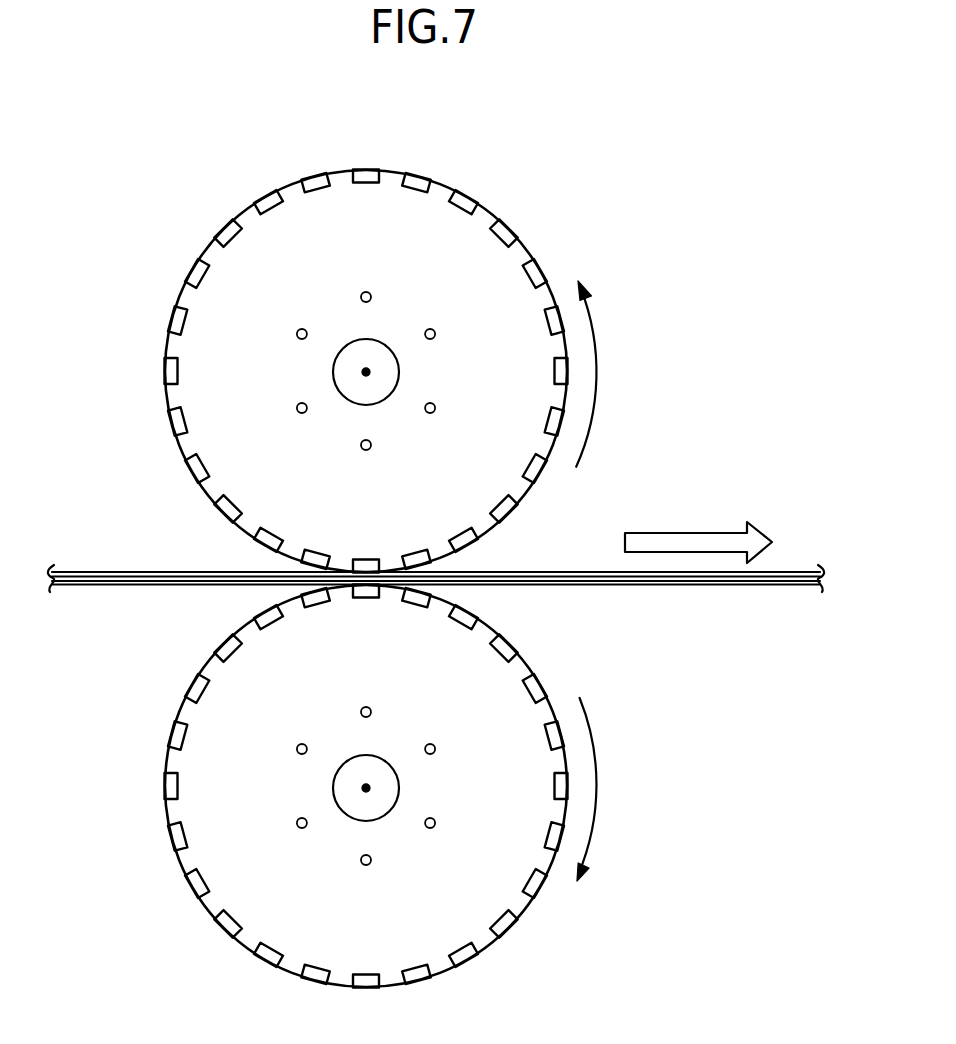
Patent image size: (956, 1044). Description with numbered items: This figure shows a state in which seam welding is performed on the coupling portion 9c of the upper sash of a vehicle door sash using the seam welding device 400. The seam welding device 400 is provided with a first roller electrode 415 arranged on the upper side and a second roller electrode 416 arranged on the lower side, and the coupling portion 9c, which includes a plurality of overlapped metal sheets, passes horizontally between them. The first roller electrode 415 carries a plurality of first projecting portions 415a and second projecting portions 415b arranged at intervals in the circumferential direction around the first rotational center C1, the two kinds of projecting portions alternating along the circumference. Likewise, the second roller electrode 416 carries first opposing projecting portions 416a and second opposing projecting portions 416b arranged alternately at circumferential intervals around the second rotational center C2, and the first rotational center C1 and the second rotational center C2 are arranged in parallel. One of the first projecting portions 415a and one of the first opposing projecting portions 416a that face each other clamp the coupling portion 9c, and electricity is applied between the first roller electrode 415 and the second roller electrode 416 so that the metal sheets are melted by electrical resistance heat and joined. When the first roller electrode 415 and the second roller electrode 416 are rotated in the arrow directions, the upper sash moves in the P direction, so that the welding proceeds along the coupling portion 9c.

The seam welding device 400 is at (477, 153).
The first roller electrode 415 is at (538, 240).
The first projecting portions 415a is at (242, 212).
The second projecting portions 415b is at (223, 228).
The second roller electrode 416 is at (536, 922).
The first opposing projecting portions 416a is at (178, 705).
The second opposing projecting portions 416b is at (170, 734).
The first rotational center C1 is at (366, 372).
The second rotational center C2 is at (366, 788).
The coupling portion 9c is at (120, 588).
The P direction P is at (680, 530).